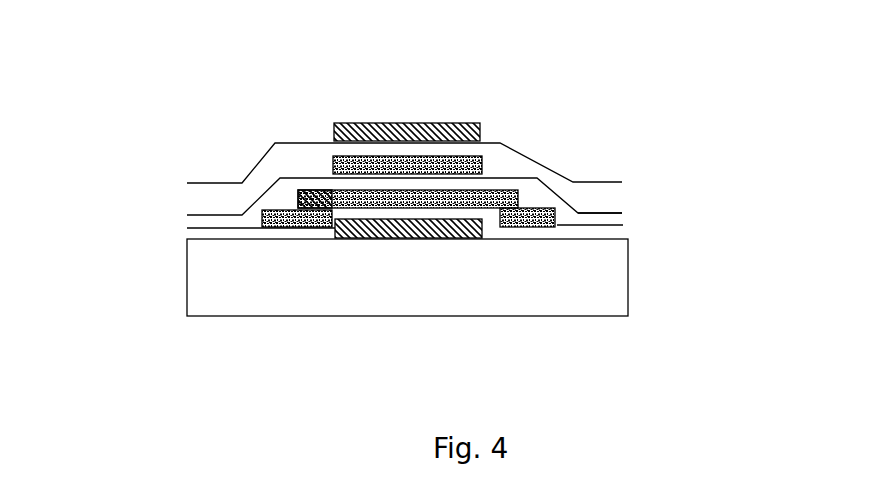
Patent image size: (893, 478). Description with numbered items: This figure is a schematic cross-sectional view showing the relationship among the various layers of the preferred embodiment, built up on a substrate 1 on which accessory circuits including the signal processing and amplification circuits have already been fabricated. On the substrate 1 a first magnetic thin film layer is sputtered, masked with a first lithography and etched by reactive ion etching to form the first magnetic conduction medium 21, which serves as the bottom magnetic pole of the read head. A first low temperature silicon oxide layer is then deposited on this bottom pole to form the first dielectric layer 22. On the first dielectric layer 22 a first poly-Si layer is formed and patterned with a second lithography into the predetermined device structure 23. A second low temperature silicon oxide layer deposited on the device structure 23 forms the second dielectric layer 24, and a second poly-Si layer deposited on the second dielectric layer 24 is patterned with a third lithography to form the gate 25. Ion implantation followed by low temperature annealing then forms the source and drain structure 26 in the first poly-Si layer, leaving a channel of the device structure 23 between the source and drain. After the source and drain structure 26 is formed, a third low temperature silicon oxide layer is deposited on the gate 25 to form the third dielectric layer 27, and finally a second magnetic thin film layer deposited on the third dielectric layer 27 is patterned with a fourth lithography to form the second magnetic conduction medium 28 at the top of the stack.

The substrate 1 is at (405, 292).
The first magnetic conduction medium 21 is at (298, 192).
The first dielectric layer 22 is at (614, 224).
The predetermined device structure 23 is at (349, 192).
The second dielectric layer 24 is at (611, 212).
The gate 25 is at (486, 162).
The source and drain structure 26 is at (541, 226).
The third dielectric layer 27 is at (602, 197).
The second magnetic conduction medium 28 is at (333, 129).